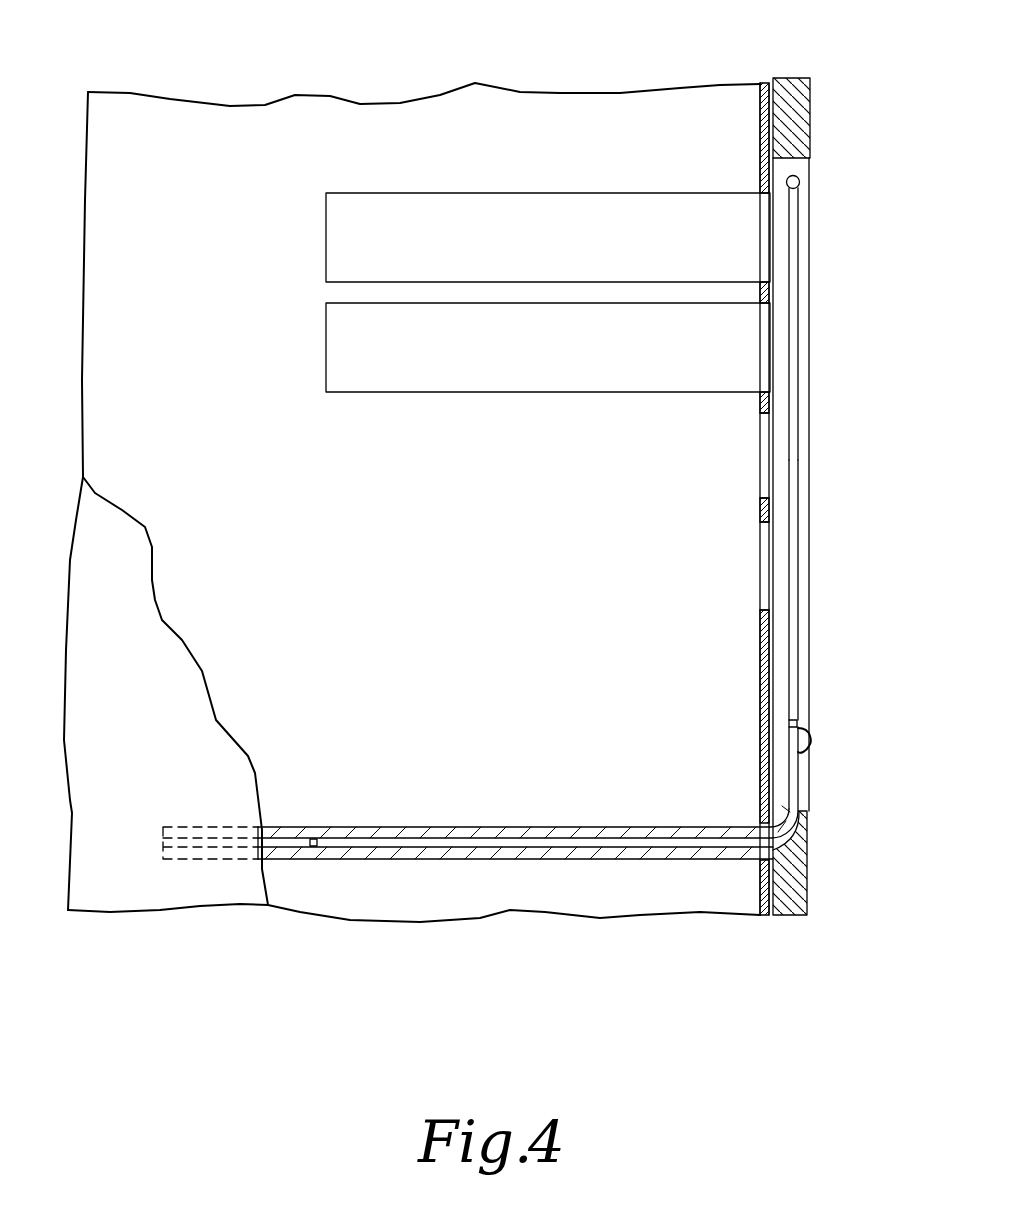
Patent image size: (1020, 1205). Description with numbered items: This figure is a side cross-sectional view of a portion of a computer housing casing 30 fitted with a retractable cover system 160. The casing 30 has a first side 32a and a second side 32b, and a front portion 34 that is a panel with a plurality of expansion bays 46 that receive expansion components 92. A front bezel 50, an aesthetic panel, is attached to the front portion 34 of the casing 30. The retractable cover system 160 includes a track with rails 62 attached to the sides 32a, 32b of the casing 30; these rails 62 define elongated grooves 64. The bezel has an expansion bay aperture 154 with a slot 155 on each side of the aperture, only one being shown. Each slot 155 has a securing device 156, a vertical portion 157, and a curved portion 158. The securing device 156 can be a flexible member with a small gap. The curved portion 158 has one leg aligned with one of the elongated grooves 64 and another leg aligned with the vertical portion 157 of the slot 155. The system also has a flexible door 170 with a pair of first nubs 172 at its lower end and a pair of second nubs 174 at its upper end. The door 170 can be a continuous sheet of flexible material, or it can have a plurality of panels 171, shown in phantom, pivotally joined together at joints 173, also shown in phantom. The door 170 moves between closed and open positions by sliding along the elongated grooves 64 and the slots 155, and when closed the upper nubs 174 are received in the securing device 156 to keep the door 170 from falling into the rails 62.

The casing 30 is at (496, 58).
The first side 32a is at (147, 648).
The second side 32b is at (208, 274).
The front portion 34 is at (762, 127).
The expansion bays 46 is at (762, 196).
The front bezel 50 is at (800, 103).
The rails 62 is at (268, 828).
The elongated grooves 64 is at (295, 829).
The expansion components 92 is at (378, 193).
The expansion bay aperture 154 is at (800, 170).
The slot 155 is at (795, 513).
The securing device 156 is at (799, 188).
The vertical portion 157 is at (795, 358).
The curved portion 158 is at (807, 850).
The retractable cover system 160 is at (528, 864).
The flexible door 170 is at (789, 738).
The panels 171 is at (526, 827).
The first nubs 172 is at (318, 840).
The joints 173 is at (640, 860).
The second nubs 174 is at (797, 723).